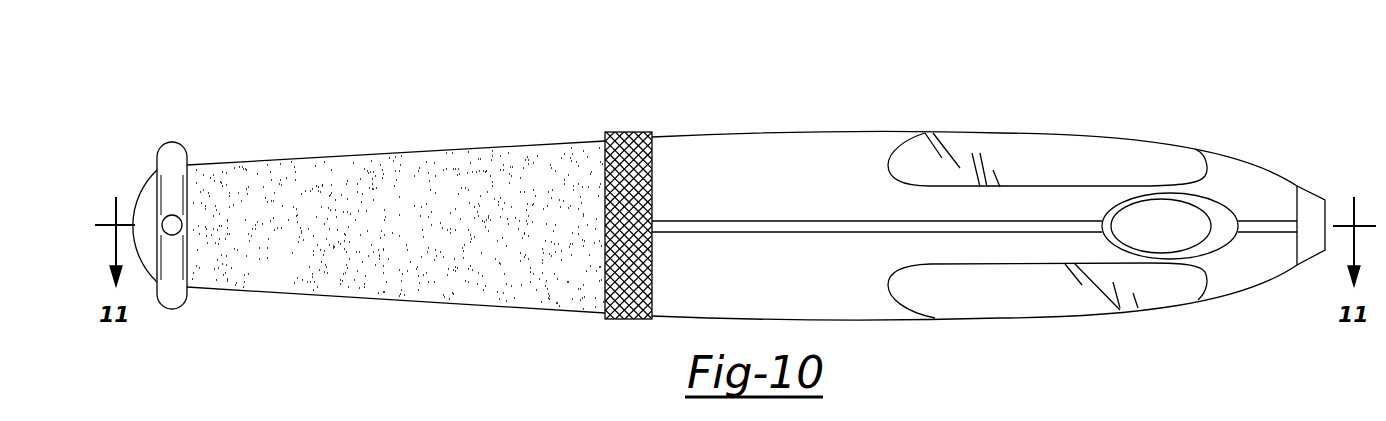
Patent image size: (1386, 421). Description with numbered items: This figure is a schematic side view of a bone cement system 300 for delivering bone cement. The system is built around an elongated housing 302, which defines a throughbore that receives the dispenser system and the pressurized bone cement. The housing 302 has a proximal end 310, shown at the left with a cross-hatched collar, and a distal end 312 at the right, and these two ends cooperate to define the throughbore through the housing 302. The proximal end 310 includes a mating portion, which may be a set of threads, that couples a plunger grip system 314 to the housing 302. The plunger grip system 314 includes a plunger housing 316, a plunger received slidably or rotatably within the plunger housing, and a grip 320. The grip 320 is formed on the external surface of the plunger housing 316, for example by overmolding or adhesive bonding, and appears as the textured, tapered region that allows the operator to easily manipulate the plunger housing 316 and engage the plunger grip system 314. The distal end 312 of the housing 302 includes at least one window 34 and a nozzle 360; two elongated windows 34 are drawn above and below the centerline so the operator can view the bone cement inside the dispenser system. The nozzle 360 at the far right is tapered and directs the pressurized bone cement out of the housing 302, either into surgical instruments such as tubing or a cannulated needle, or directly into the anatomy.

The bone cement system 300 is at (1091, 70).
The housing 302 is at (815, 121).
The proximal end 310 is at (623, 127).
The distal end 312 is at (1244, 304).
The plunger grip system 314 is at (444, 314).
The plunger housing 316 is at (475, 139).
The grip 320 is at (378, 150).
The window 34 is at (1020, 140).
The nozzle 360 is at (1306, 179).